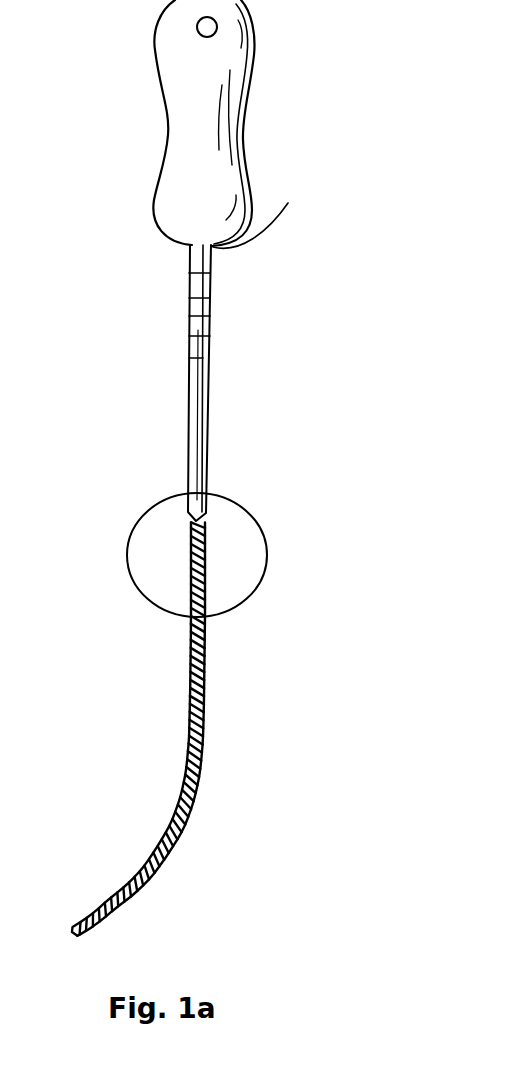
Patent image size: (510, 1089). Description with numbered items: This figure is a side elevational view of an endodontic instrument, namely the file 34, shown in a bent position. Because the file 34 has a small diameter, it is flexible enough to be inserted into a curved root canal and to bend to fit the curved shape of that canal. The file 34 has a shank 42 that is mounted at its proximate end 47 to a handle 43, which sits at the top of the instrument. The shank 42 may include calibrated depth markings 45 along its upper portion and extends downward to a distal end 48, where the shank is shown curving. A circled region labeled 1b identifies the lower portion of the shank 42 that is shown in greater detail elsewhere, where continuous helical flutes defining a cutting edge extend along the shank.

The handle 43 is at (182, 128).
The proximate end 47 is at (272, 210).
The file 34 is at (279, 256).
The calibrated depth markings 45 is at (184, 286).
The shank 42 is at (207, 378).
The detail region of FIG. 1b is at (262, 522).
The distal end 48 is at (56, 921).